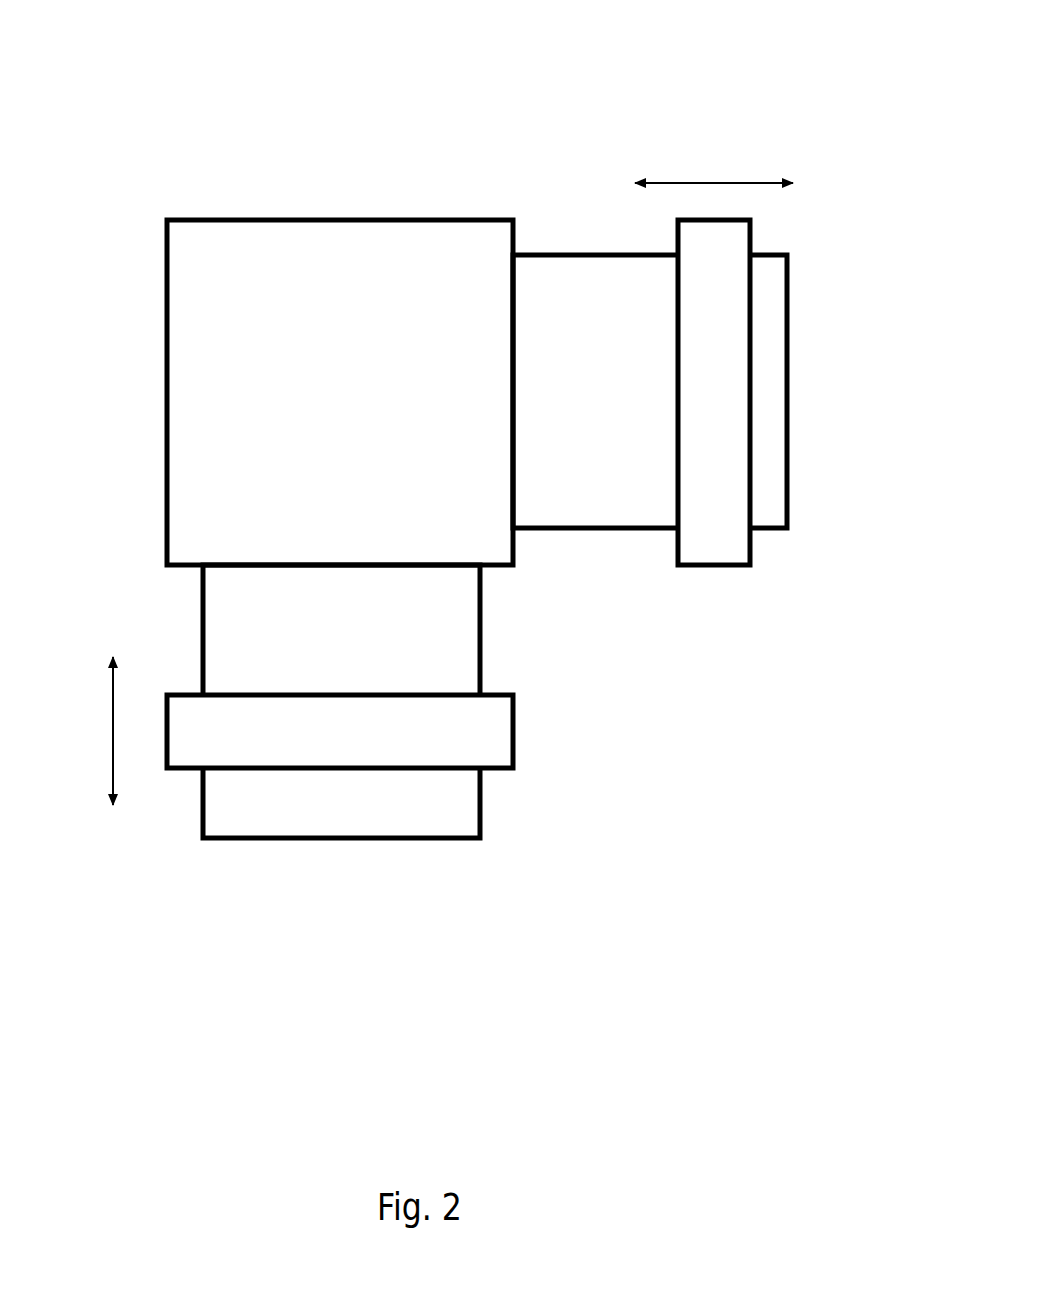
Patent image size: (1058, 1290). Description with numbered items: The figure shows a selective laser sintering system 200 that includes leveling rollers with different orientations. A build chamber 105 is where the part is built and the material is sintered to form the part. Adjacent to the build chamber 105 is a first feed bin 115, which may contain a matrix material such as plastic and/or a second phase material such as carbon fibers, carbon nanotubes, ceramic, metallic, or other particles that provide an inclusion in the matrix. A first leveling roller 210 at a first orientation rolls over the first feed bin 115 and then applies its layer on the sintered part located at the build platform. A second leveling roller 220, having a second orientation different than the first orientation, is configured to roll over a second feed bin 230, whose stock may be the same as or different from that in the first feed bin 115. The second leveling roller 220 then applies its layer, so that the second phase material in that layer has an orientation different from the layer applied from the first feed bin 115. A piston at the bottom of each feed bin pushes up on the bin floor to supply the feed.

The selective laser sintering system 200 is at (465, 150).
The build chamber 105 is at (340, 218).
The first feed bin 115 is at (789, 393).
The first leveling roller 210 is at (713, 565).
The second leveling roller 220 is at (515, 732).
The second feed bin 230 is at (200, 642).